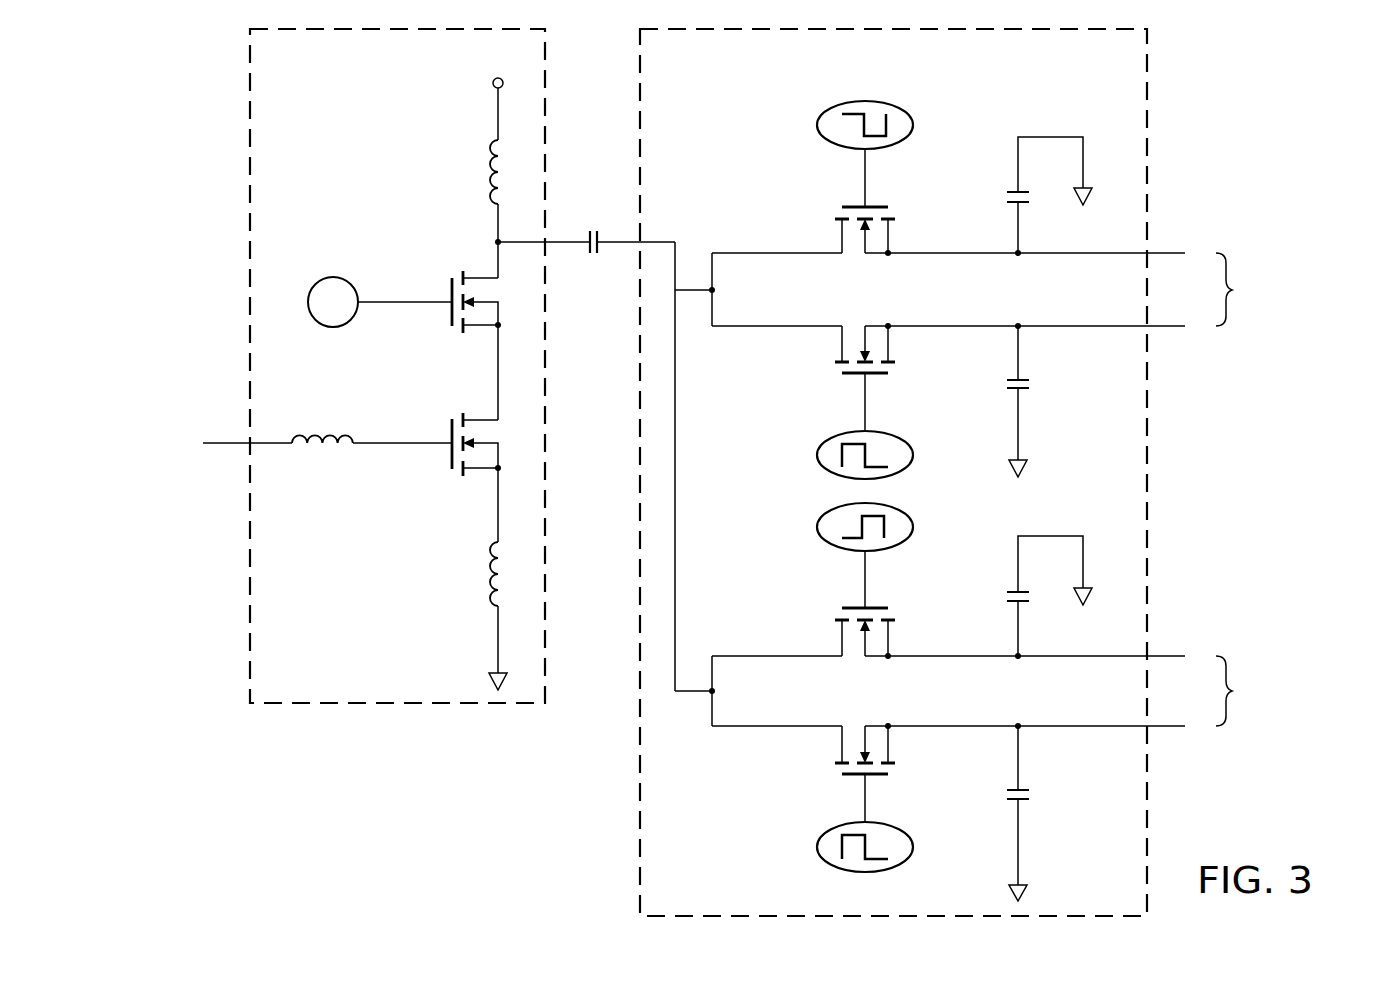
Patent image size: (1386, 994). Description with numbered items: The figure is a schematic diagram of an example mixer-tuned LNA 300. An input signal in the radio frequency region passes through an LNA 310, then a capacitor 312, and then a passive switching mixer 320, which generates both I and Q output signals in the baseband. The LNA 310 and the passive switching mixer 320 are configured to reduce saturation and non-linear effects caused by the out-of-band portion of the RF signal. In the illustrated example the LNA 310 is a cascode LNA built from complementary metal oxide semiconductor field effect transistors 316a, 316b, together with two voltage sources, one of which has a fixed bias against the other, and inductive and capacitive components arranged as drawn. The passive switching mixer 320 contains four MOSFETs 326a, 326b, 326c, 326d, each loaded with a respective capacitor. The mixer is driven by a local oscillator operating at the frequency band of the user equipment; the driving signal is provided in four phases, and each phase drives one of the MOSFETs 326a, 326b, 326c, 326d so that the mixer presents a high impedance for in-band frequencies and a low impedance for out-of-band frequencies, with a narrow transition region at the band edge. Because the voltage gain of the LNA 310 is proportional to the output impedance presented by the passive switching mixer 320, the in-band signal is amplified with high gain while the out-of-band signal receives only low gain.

The mixer-tuned LNA 300 is at (148, 276).
The LNA 310 is at (244, 70).
The capacitor 312 is at (593, 253).
The CMOS FET 316a is at (449, 291).
The CMOS FET 316b is at (449, 456).
The passive switching mixer 320 is at (1154, 62).
The MOSFET 326a is at (852, 205).
The MOSFET 326b is at (852, 379).
The MOSFET 326c is at (852, 604).
The MOSFET 326d is at (852, 779).